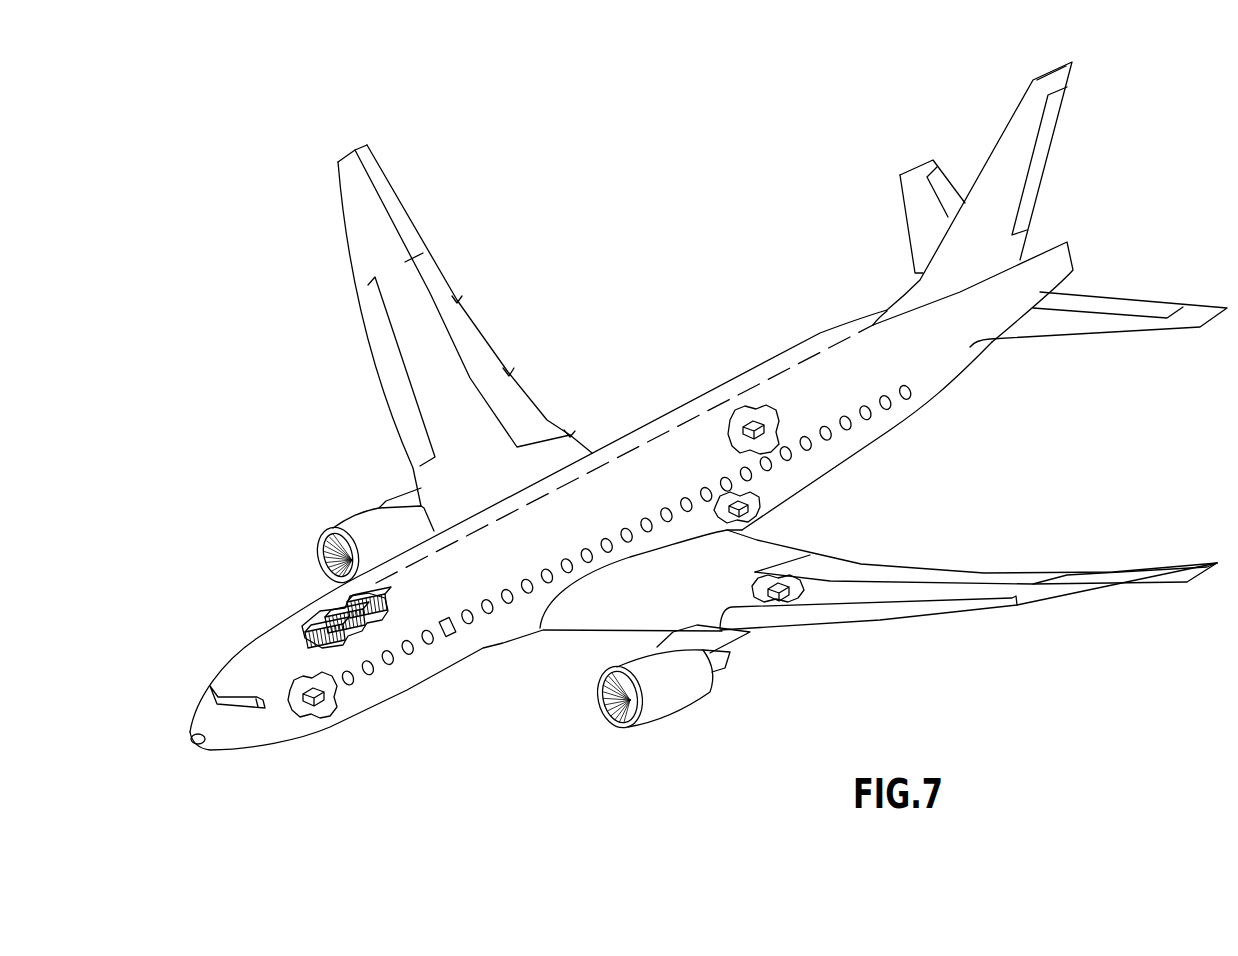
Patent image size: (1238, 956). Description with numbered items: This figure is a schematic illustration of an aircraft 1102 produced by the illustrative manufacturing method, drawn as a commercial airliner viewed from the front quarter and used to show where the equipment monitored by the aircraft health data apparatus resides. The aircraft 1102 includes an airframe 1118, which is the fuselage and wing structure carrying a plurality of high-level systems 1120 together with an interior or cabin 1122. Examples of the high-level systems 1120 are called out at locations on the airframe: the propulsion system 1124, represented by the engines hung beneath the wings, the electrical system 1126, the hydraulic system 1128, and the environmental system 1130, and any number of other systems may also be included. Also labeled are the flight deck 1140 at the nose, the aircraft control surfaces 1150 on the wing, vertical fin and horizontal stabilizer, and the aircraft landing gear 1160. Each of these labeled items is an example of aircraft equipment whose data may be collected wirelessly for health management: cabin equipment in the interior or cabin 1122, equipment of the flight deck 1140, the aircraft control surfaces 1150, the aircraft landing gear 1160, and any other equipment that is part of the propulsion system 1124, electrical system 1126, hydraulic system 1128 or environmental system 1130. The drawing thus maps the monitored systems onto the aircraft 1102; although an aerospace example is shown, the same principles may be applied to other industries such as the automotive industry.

The aircraft 1102 is at (302, 323).
The airframe 1118 is at (306, 590).
The high-level systems 1120 is at (1013, 527).
The interior or cabin 1122 is at (350, 645).
The propulsion system 1124 is at (360, 522).
The electrical system 1126 is at (310, 688).
The hydraulic system 1128 is at (778, 587).
The environmental system 1130 is at (747, 428).
The flight deck 1140 is at (247, 707).
The aircraft control surfaces 1150 is at (393, 193).
The aircraft landing gear 1160 is at (753, 510).